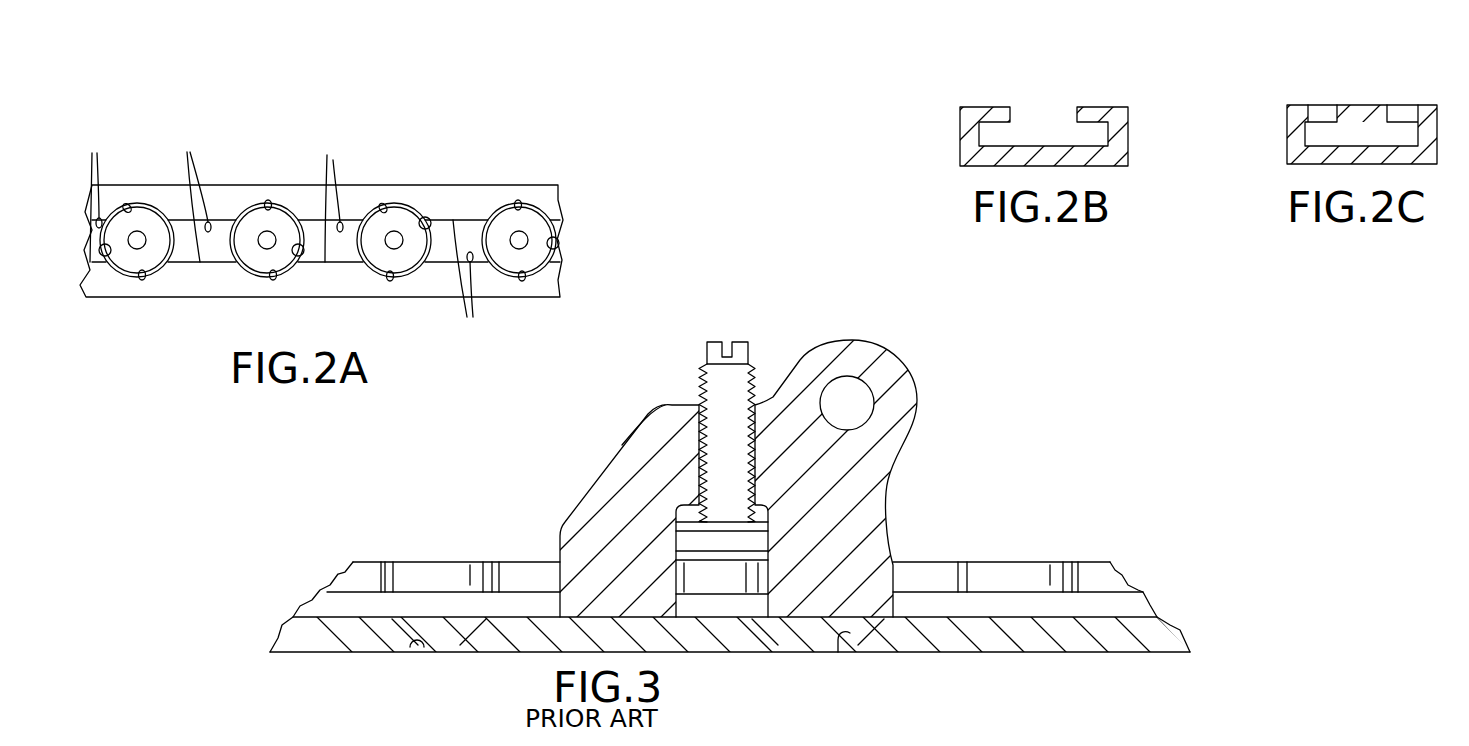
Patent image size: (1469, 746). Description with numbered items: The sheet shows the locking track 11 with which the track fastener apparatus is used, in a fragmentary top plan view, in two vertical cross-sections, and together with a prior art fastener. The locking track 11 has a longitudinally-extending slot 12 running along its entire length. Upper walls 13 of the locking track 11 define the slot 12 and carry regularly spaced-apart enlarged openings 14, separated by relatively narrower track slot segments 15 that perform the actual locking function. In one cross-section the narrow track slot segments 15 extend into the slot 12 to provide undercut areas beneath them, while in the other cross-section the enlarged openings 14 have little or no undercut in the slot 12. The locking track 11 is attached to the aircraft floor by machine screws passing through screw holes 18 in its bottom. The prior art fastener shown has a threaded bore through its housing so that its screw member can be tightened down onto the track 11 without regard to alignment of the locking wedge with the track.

In FIG. 2A, the locking track 11 is at (481, 182).
In FIG. 2B, the locking track 11 is at (955, 145).
In FIG. 2C, the locking track 11 is at (1282, 148).
In FIG. 3, the locking track 11 is at (1179, 587).
In FIG. 2A, the slot 12 is at (396, 231).
In FIG. 2B, the slot 12 is at (1047, 130).
In FIG. 2C, the slot 12 is at (1358, 123).
In FIG. 3, the slot 12 is at (348, 601).
In FIG. 2A, the upper walls 13 is at (214, 202).
In FIG. 2B, the upper walls 13 is at (975, 107).
In FIG. 2C, the upper walls 13 is at (1319, 105).
In FIG. 2A, the enlarged openings 14 is at (128, 205).
In FIG. 2C, the enlarged openings 14 is at (1305, 104).
In FIG. 3, the enlarged openings 14 is at (437, 568).
In FIG. 2A, the track slot segments 15 is at (278, 235).
In FIG. 2B, the track slot segments 15 is at (1012, 117).
In FIG. 2C, the track slot segments 15 is at (1338, 110).
In FIG. 3, the track slot segments 15 is at (362, 572).
In FIG. 2A, the screw holes 18 is at (427, 218).
In FIG. 3, the screw holes 18 is at (417, 643).